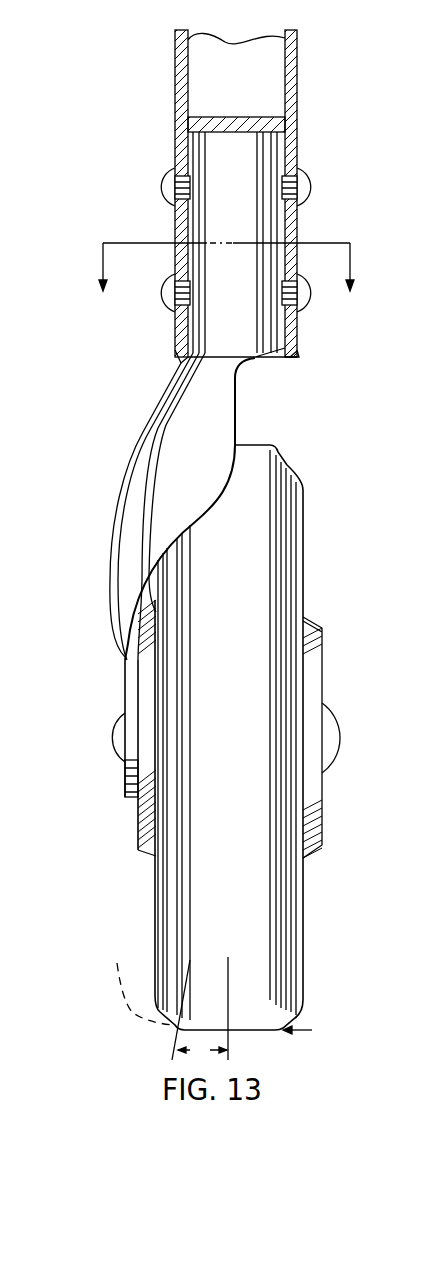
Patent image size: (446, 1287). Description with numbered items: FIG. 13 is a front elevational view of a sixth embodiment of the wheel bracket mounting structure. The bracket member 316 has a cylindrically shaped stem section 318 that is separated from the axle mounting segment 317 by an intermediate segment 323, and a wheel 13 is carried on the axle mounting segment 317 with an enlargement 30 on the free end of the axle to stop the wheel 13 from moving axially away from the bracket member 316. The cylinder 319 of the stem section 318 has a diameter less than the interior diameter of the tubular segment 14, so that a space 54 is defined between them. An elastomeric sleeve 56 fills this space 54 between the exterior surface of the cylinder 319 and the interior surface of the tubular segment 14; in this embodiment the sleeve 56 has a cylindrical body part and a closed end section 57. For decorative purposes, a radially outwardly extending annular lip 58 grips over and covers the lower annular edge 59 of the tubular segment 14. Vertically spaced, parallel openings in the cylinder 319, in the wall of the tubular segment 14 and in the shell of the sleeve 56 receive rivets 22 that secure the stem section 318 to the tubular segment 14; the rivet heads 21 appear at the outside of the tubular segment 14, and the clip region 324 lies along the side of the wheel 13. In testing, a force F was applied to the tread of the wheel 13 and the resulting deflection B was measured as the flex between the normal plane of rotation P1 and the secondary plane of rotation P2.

The tubular segment 14 is at (293, 88).
The space 54 is at (188, 160).
The sleeve 56 is at (263, 128).
The closed end section 57 is at (224, 128).
The cylinder 319 is at (260, 157).
The seal ring 21 is at (287, 180).
The rivets 22 is at (300, 190).
The stem section 318 is at (208, 230).
The lower annular edge 59 is at (187, 357).
The annular lip 58 is at (297, 360).
The bracket member 316 is at (138, 440).
The intermediate segment 323 is at (140, 513).
The wheel 13 is at (311, 563).
The left clip 324 is at (125, 660).
The axle mounting segment 317 is at (125, 782).
The enlargement 30 is at (327, 738).
The secondary plane of rotation P2 is at (188, 990).
The normal plane of rotation P1 is at (232, 986).
The deflection B is at (202, 1050).
The force F is at (307, 1030).